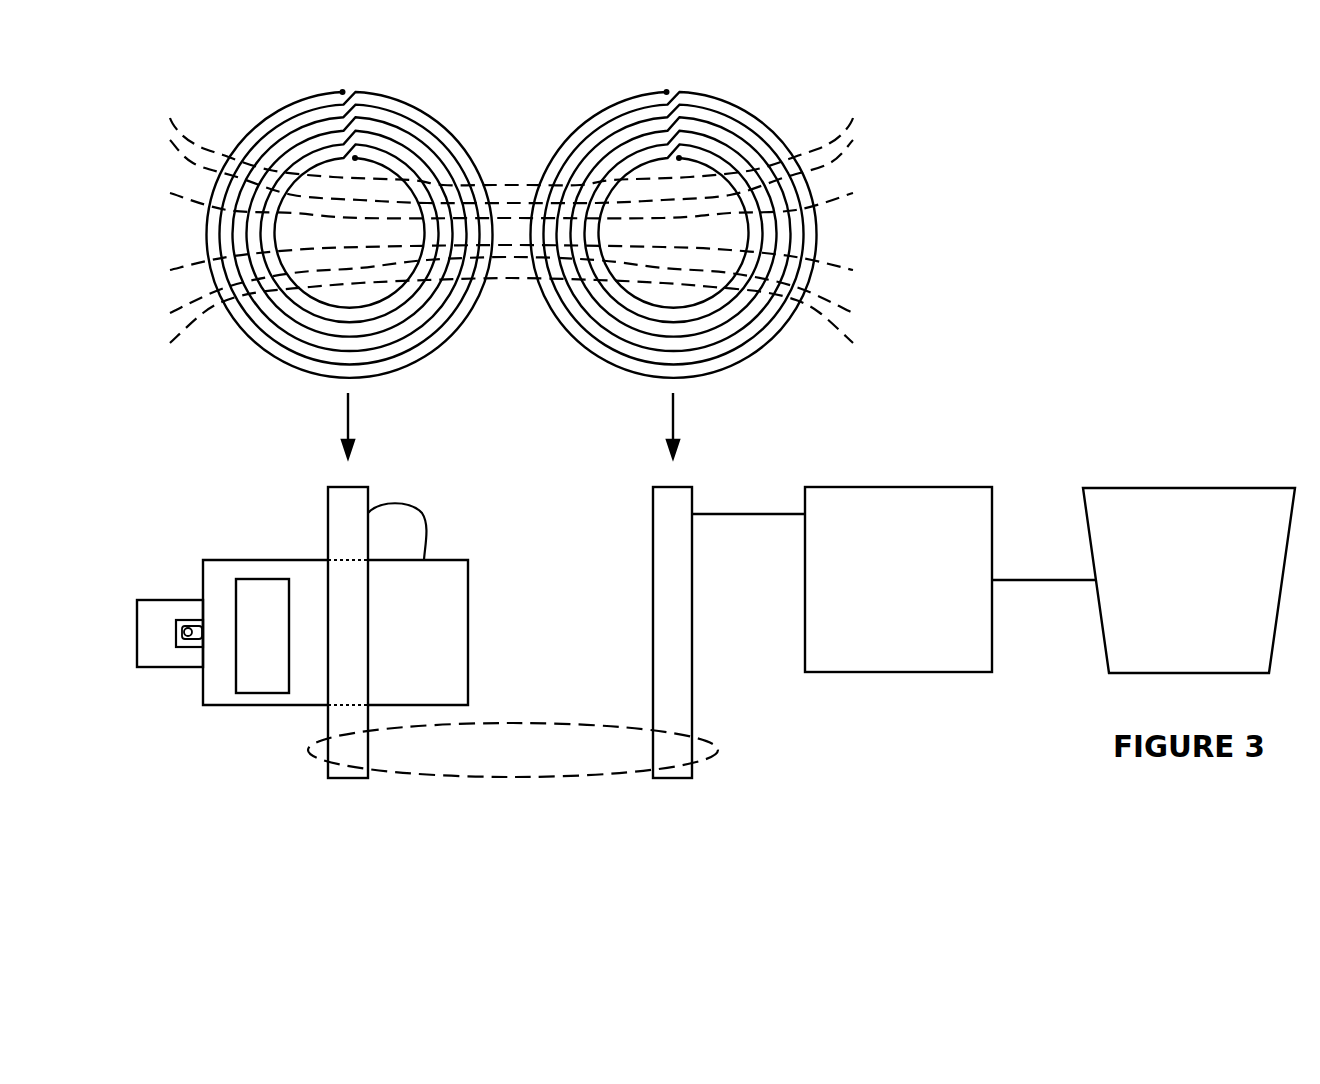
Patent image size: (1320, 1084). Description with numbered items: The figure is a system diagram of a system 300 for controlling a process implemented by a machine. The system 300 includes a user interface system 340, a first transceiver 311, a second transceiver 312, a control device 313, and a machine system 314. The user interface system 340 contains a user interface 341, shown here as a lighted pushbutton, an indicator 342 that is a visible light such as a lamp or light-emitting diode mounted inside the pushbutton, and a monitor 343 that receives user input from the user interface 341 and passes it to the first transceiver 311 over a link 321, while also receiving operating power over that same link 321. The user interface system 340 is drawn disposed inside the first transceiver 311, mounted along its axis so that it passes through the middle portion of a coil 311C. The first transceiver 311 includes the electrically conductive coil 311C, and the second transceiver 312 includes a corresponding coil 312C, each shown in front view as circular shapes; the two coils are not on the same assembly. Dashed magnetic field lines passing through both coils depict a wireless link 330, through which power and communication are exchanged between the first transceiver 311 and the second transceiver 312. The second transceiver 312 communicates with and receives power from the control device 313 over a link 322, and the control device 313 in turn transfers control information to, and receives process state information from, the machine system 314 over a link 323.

The system 300 is at (1108, 205).
The first transceiver 311 is at (360, 778).
The coil 311C is at (443, 340).
The second transceiver 312 is at (682, 778).
The coil 312C is at (765, 342).
The control device 313 is at (880, 617).
The machine system 314 is at (1170, 617).
The link 321 is at (430, 513).
The link 322 is at (727, 514).
The link 323 is at (1012, 580).
The wireless link 330 is at (893, 327).
The user interface system 340 is at (277, 707).
The user interface 341 is at (143, 600).
The indicator 342 is at (183, 620).
The monitor 343 is at (281, 616).